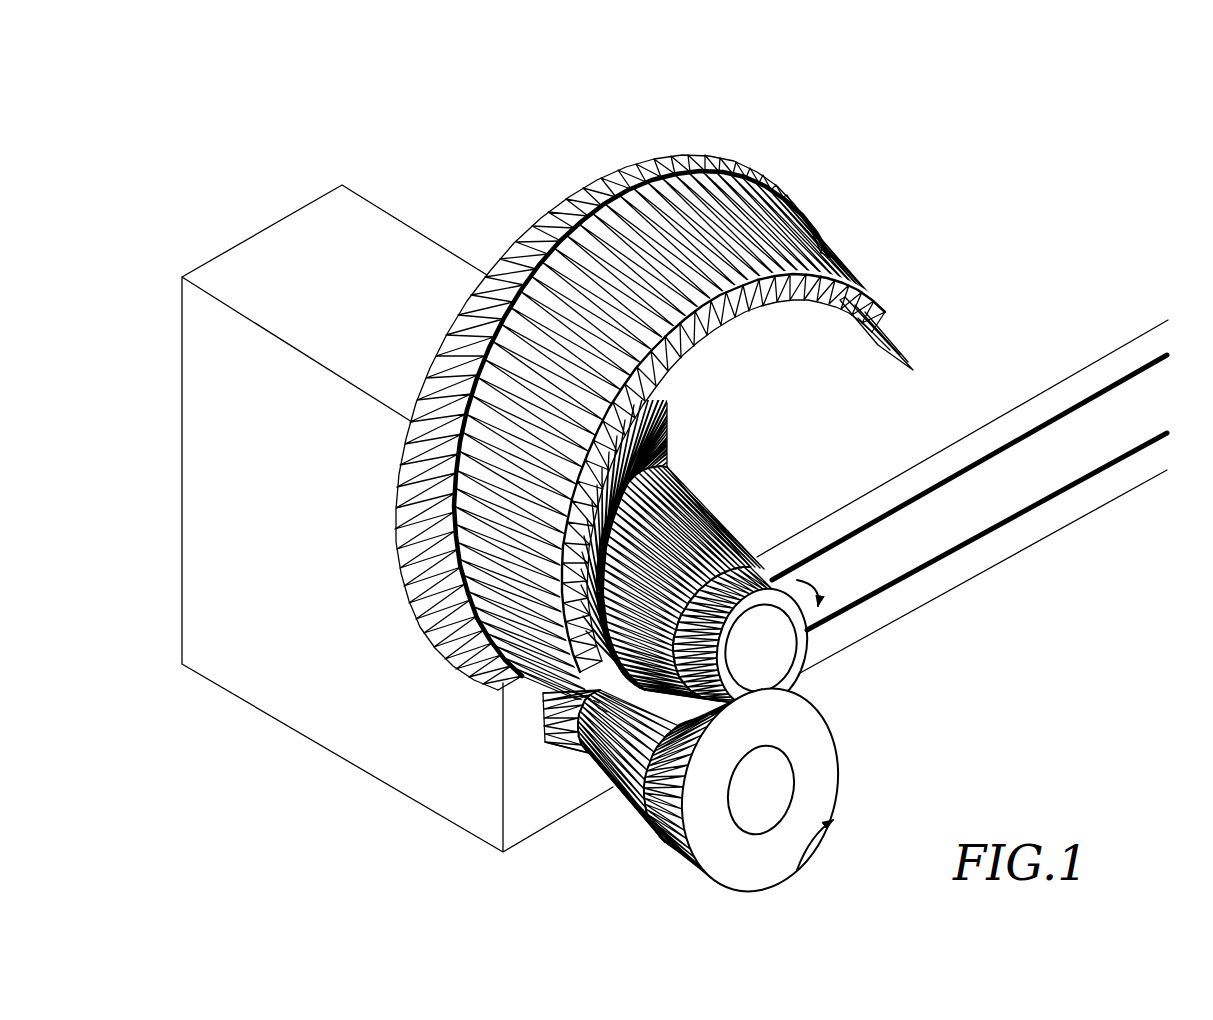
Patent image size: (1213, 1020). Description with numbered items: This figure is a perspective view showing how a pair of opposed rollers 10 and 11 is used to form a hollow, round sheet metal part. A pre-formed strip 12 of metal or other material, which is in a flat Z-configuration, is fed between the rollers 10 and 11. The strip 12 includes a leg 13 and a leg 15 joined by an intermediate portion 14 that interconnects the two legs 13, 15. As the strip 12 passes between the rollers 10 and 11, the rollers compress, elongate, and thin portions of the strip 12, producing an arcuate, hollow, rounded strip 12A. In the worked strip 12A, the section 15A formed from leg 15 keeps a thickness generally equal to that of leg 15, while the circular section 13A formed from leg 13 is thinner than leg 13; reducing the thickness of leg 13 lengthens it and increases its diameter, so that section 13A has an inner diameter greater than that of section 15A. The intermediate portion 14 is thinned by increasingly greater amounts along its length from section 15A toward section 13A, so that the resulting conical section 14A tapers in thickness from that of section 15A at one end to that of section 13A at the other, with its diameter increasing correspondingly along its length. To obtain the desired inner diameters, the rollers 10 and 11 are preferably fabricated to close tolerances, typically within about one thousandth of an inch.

The roller 10 is at (847, 785).
The roller 11 is at (731, 504).
The pre-formed strip 12 is at (962, 462).
The arcuate hollow rounded strip 12A is at (665, 374).
The leg 13 is at (1028, 412).
The circular section 13A is at (676, 151).
The intermediate portion 14 is at (1031, 489).
The conical section 14A is at (826, 252).
The leg 15 is at (1010, 545).
The section 15A is at (906, 348).